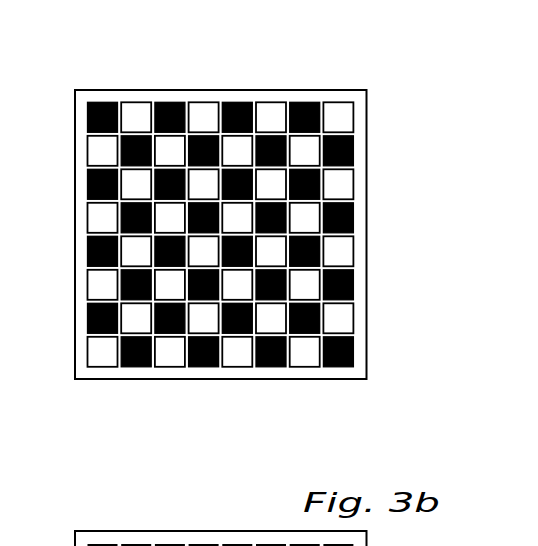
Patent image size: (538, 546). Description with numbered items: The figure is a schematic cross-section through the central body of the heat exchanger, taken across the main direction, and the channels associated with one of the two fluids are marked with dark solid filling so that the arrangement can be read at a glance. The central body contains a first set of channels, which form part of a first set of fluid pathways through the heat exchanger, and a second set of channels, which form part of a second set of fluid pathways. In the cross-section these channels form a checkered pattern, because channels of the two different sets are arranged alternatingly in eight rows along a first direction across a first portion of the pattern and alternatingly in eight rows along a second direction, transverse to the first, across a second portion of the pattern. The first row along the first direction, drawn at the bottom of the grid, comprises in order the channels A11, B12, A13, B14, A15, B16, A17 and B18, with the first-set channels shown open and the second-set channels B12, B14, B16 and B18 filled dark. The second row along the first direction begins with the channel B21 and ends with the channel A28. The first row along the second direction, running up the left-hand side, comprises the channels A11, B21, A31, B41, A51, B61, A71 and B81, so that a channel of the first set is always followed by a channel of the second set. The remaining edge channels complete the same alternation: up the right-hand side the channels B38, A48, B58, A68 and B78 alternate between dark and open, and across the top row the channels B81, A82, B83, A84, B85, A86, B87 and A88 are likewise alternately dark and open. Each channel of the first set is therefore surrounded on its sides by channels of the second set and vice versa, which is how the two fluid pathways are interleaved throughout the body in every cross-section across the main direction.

The channel A11 is at (103, 357).
The channel B12 is at (140, 366).
The channel A13 is at (172, 357).
The channel B14 is at (203, 366).
The channel A15 is at (235, 355).
The channel B16 is at (270, 366).
The channel A17 is at (303, 355).
The channel B18 is at (353, 365).
The channel B21 is at (88, 315).
The channel A28 is at (343, 320).
The channel A31 is at (97, 283).
The channel B38 is at (353, 285).
The channel B41 is at (88, 250).
The channel A48 is at (343, 250).
The channel A51 is at (97, 217).
The channel B58 is at (353, 215).
The channel B61 is at (88, 185).
The channel A68 is at (343, 180).
The channel A71 is at (97, 150).
The channel B78 is at (353, 152).
The channel B81 is at (102, 102).
The channel A82 is at (133, 112).
The channel B83 is at (167, 102).
The channel A84 is at (197, 112).
The channel B85 is at (232, 102).
The channel A86 is at (270, 112).
The channel B87 is at (305, 102).
The channel A88 is at (347, 112).